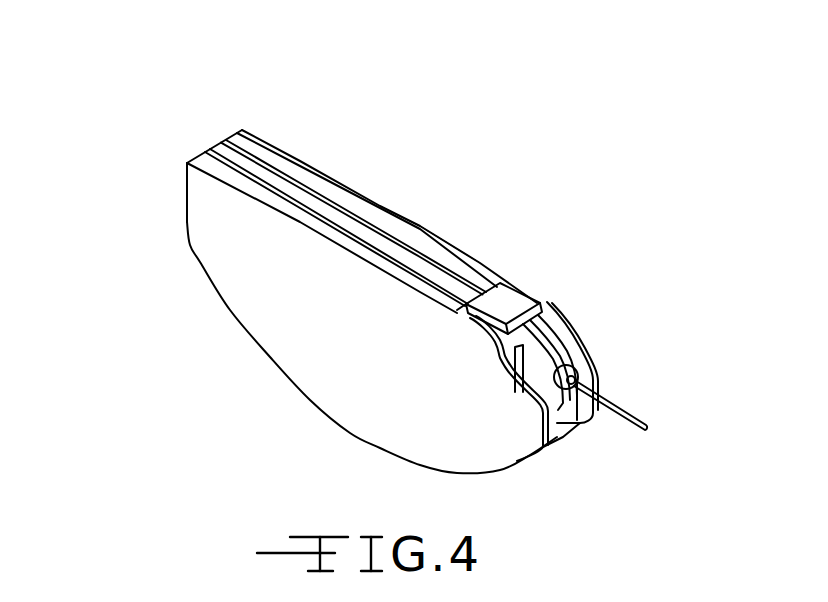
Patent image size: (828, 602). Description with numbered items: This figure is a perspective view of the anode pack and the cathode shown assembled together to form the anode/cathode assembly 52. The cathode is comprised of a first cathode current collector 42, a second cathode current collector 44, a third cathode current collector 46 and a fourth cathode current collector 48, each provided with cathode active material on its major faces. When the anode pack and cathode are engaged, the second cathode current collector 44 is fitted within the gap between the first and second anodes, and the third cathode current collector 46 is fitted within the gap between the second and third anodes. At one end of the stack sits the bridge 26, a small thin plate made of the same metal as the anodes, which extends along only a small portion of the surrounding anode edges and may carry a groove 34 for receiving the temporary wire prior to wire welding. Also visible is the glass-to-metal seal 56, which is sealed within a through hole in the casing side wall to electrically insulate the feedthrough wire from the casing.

The anode/cathode assembly 52 is at (203, 113).
The third cathode current collector 46 is at (366, 221).
The second cathode current collector 44 is at (247, 177).
The first cathode current collector 42 is at (277, 212).
The fourth cathode current collector 48 is at (430, 232).
The groove 34 is at (508, 294).
The bridge 26 is at (533, 296).
The glass-to-metal seal 56 is at (562, 369).